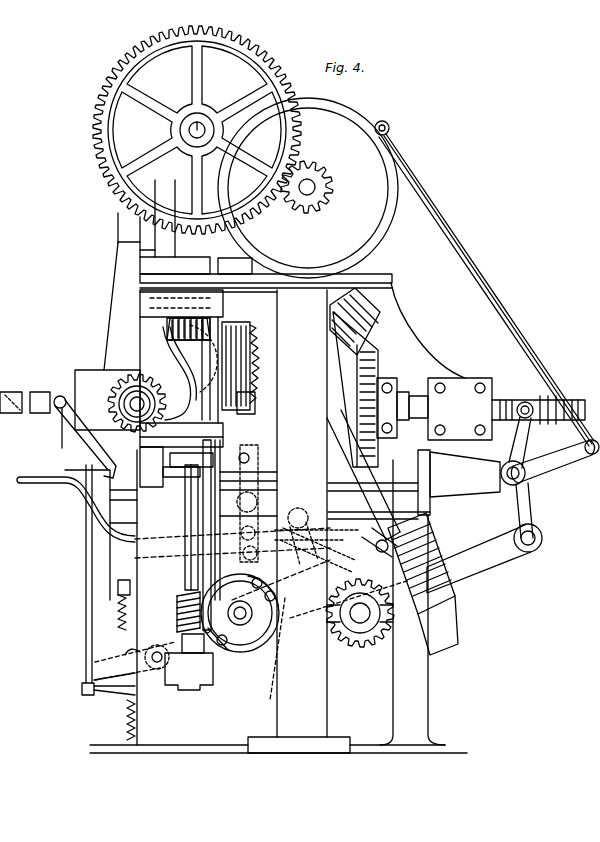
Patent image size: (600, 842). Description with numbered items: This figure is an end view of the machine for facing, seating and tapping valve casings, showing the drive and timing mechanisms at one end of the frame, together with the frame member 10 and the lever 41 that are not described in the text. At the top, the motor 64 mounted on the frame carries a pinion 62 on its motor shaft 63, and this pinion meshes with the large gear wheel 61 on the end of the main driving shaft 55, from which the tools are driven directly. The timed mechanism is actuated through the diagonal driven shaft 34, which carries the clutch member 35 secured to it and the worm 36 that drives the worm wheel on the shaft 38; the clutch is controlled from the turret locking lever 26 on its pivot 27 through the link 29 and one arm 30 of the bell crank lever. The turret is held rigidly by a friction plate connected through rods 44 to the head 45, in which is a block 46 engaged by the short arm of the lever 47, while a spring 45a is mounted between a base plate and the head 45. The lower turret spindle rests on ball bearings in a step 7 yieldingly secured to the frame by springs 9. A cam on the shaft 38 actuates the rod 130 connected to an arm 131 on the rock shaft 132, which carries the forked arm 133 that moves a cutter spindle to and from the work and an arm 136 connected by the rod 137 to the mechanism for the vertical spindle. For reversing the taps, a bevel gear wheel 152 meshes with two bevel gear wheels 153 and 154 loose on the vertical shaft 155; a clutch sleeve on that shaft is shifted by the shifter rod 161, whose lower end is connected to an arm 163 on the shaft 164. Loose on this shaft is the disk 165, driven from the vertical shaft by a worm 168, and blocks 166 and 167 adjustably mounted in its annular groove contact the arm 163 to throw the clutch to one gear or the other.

The gear wheel 61 is at (262, 72).
The main driving shaft 55 is at (192, 126).
The pinion 62 is at (318, 172).
The motor shaft 63 is at (306, 194).
The motor 64 is at (375, 165).
The rod 137 is at (488, 290).
The forked arm 133 is at (523, 401).
The rock shaft 132 is at (524, 482).
The arm 136 is at (556, 460).
The arm 131 is at (516, 508).
The rod 130 is at (497, 556).
The driven shaft 34 is at (366, 466).
The clutch member 35 is at (388, 532).
The worm 36 is at (430, 566).
The shaft 38 is at (362, 620).
The bar 10 is at (238, 411).
The lever arm 41 is at (72, 497).
The bevel gear wheel 153 is at (160, 310).
The bevel gear wheel 152 is at (252, 362).
The bevel gear wheel 154 is at (252, 395).
The shifter rod 161 is at (222, 462).
The vertical shaft 155 is at (192, 574).
The worm 168 is at (177, 614).
The springs 9 is at (170, 626).
The step 7 is at (118, 616).
The disk 165 is at (242, 652).
The shaft 164 is at (253, 613).
The arm 163 is at (222, 612).
The block 167 is at (226, 650).
The block 166 is at (232, 564).
The lever 47 is at (340, 640).
The lever 26 is at (262, 485).
The pivot 27 is at (258, 503).
The link 29 is at (294, 512).
The bell crank lever arm 30 is at (322, 528).
The rods 44 is at (86, 622).
The head 45 is at (95, 695).
The spring 45a is at (127, 727).
The block 46 is at (134, 660).